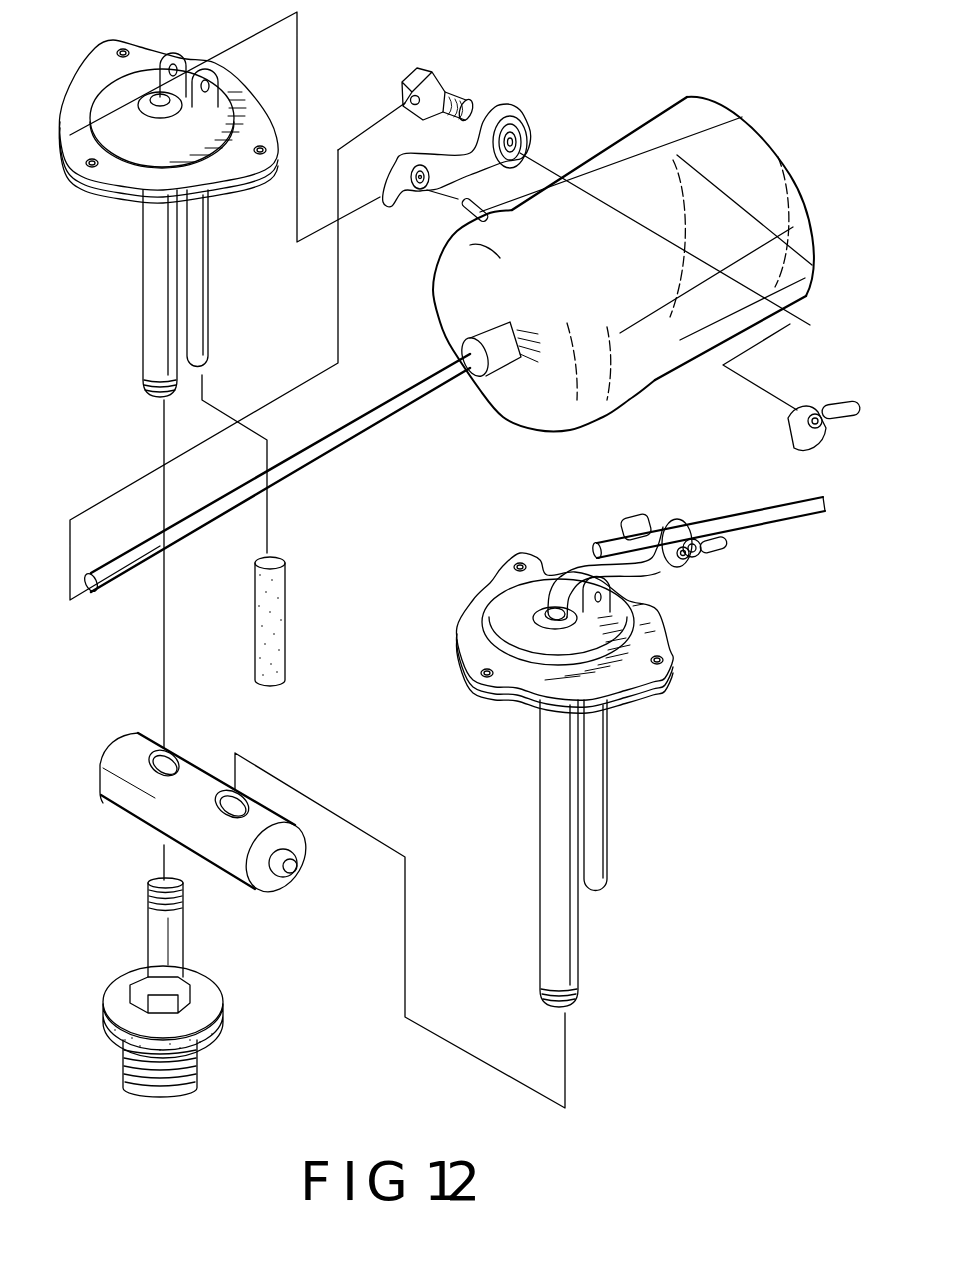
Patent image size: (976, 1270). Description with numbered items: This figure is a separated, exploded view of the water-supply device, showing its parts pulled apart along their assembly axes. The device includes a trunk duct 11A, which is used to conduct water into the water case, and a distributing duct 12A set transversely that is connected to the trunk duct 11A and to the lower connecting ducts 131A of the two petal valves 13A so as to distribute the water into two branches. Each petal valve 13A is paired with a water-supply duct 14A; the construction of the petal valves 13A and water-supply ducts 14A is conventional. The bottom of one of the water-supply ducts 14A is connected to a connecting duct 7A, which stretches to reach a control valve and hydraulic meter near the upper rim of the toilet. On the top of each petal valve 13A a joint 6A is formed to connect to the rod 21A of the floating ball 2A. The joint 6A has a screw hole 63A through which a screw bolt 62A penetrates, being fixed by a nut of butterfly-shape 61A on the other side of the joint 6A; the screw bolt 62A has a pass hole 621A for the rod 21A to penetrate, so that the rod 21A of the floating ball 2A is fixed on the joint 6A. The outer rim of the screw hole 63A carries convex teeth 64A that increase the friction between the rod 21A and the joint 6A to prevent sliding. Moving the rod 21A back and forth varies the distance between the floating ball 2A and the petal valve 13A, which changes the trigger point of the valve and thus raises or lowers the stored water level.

The floating ball 2A is at (627, 150).
The rod 21A is at (362, 437).
The joint 6A is at (445, 170).
The convex teeth 64A is at (493, 110).
The screw hole 63A is at (522, 137).
The screw bolt 62A is at (430, 83).
The pass hole 621A is at (410, 102).
The nut of butterfly-shape 61A is at (793, 437).
The petal valve 13A is at (113, 92).
The lower connecting duct 131A is at (155, 270).
The water-supply duct 14A is at (207, 268).
The connecting duct 7A is at (285, 600).
The distributing duct 12A is at (303, 853).
The trunk duct 11A is at (163, 948).